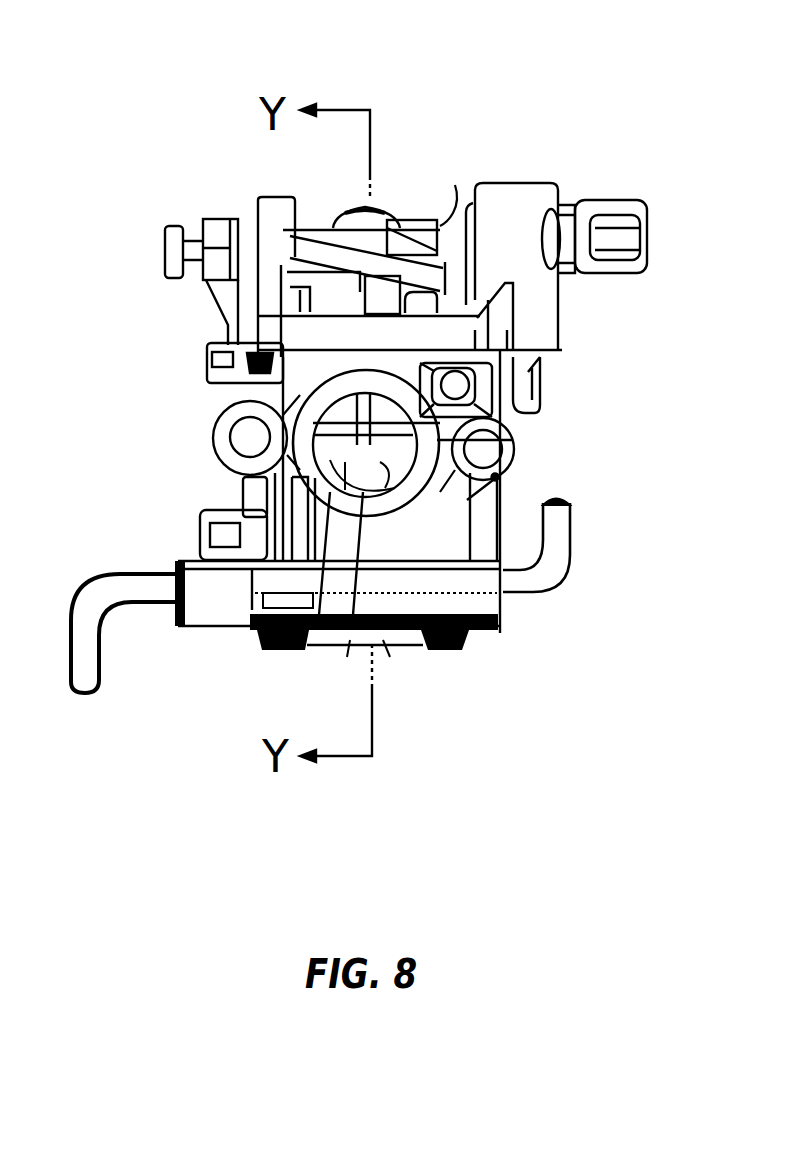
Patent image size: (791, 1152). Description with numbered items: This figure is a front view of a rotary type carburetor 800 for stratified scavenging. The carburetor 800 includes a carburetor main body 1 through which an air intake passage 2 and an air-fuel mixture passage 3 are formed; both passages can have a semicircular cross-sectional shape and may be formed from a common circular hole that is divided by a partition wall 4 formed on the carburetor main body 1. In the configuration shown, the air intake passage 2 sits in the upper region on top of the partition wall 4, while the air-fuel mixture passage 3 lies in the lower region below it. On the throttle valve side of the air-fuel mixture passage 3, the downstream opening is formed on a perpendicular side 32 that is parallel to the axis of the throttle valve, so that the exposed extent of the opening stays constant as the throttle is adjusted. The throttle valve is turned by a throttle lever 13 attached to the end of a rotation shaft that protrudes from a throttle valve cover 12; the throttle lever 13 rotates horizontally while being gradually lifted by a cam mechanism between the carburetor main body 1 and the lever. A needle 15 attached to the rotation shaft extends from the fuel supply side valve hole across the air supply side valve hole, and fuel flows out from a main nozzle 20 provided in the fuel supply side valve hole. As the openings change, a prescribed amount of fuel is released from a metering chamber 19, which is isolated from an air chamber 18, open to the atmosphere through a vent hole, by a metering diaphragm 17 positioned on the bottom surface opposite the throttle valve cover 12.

The rotary type carburetor 800 is at (642, 46).
The carburetor main body 1 is at (222, 450).
The air intake passage 2 is at (332, 426).
The air-fuel mixture passage 3 is at (300, 651).
The partition wall 4 is at (228, 487).
The throttle valve cover 12 is at (533, 306).
The throttle lever 13 is at (437, 181).
The needle 15 is at (512, 440).
The metering diaphragm 17 is at (437, 650).
The air chamber 18 is at (392, 657).
The metering chamber 19 is at (498, 602).
The main nozzle 20 is at (503, 465).
The perpendicular side 32 is at (347, 657).